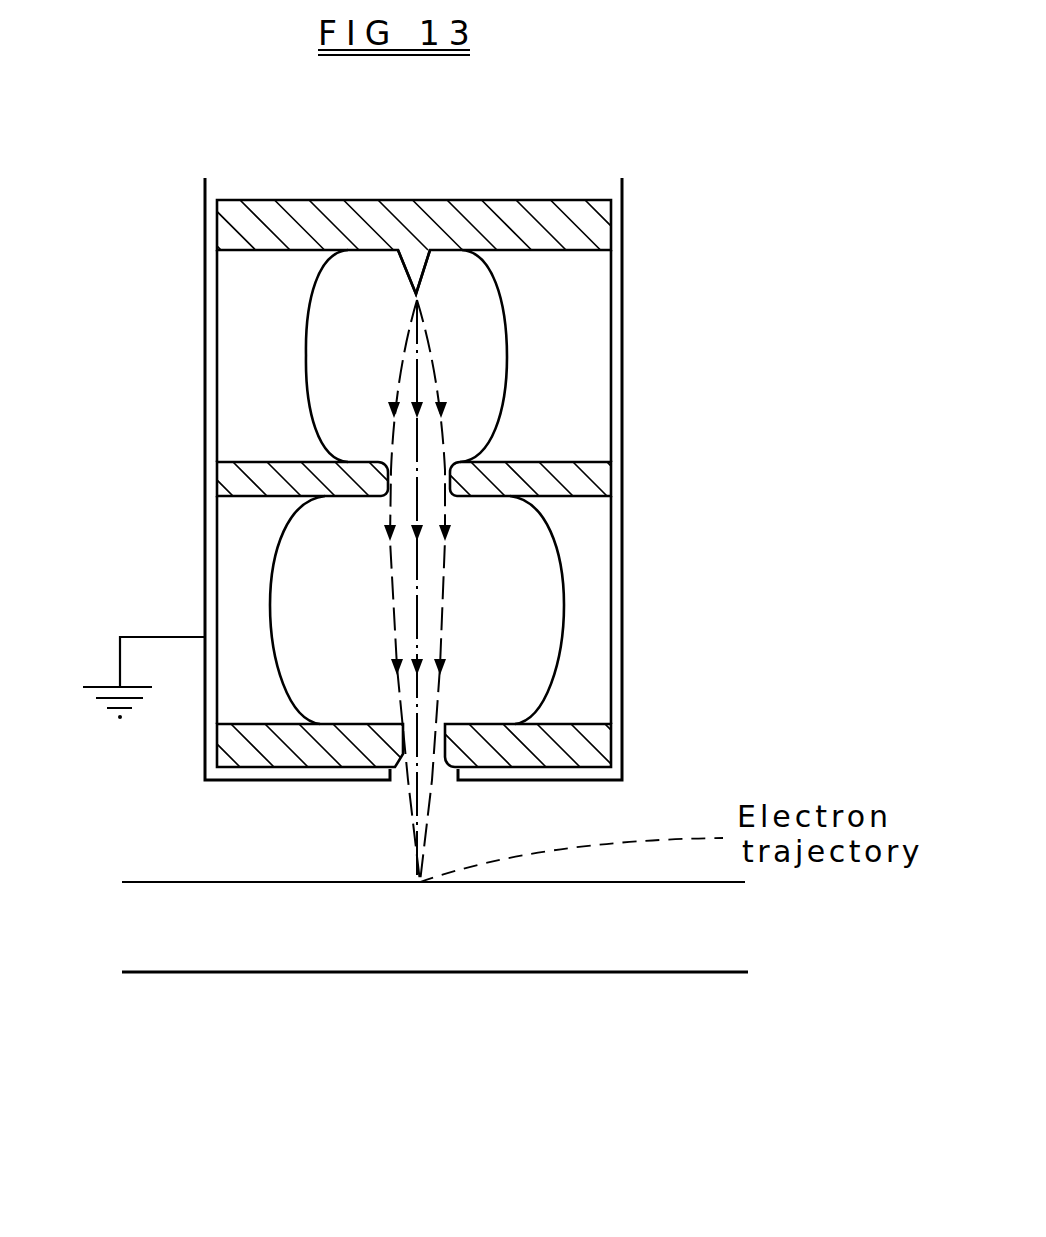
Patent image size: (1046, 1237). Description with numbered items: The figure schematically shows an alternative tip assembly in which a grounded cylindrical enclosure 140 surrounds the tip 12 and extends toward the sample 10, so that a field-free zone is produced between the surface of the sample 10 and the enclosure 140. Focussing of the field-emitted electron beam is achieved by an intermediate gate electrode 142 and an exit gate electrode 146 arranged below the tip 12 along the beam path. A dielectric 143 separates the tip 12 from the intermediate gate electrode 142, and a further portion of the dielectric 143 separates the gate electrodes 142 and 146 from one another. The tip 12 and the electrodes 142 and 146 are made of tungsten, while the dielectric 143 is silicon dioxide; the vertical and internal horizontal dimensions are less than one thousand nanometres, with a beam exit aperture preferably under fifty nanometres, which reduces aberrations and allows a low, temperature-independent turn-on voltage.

The grounded cylindrical enclosure 140 is at (203, 262).
The tip 12 is at (427, 271).
The dielectric 143 is at (257, 532).
The intermediate gate electrode 142 is at (612, 472).
The exit gate electrode 146 is at (565, 753).
The sample 10 is at (610, 928).